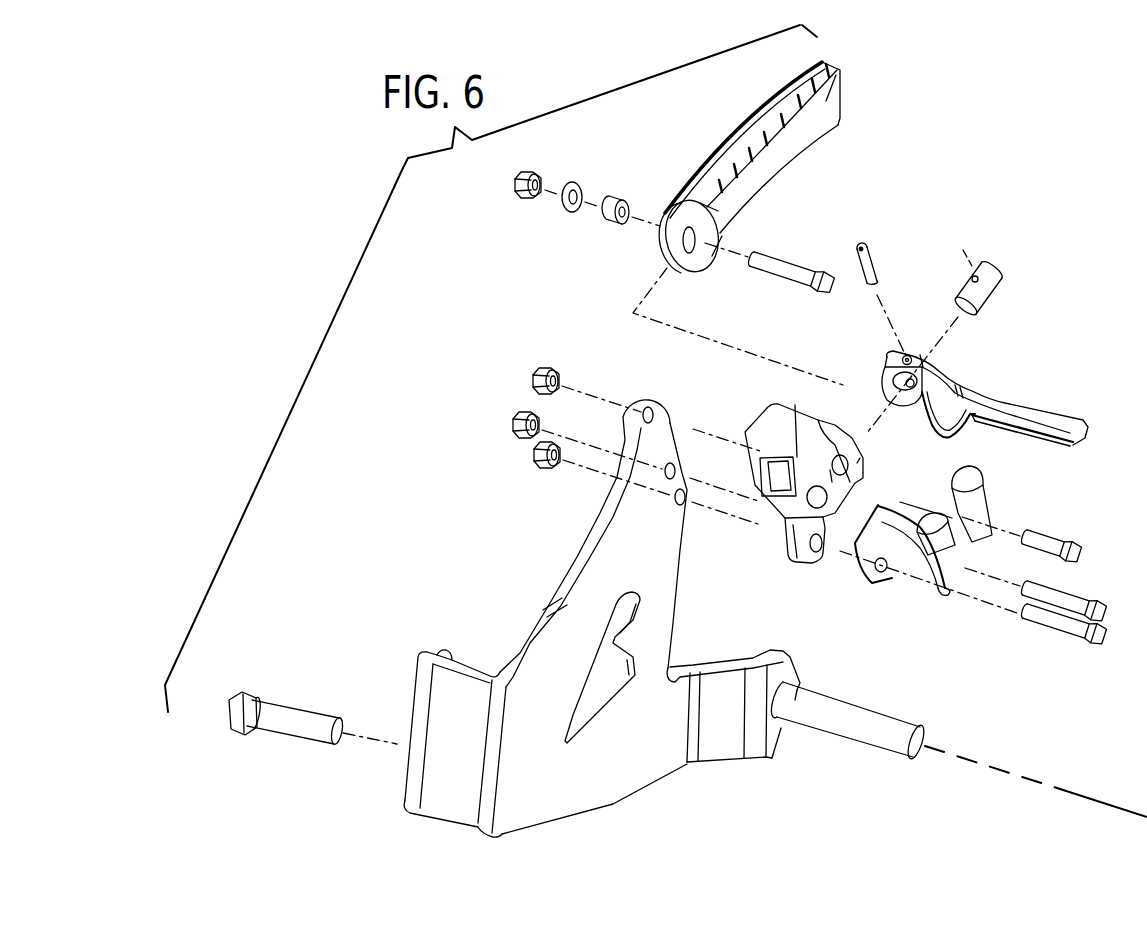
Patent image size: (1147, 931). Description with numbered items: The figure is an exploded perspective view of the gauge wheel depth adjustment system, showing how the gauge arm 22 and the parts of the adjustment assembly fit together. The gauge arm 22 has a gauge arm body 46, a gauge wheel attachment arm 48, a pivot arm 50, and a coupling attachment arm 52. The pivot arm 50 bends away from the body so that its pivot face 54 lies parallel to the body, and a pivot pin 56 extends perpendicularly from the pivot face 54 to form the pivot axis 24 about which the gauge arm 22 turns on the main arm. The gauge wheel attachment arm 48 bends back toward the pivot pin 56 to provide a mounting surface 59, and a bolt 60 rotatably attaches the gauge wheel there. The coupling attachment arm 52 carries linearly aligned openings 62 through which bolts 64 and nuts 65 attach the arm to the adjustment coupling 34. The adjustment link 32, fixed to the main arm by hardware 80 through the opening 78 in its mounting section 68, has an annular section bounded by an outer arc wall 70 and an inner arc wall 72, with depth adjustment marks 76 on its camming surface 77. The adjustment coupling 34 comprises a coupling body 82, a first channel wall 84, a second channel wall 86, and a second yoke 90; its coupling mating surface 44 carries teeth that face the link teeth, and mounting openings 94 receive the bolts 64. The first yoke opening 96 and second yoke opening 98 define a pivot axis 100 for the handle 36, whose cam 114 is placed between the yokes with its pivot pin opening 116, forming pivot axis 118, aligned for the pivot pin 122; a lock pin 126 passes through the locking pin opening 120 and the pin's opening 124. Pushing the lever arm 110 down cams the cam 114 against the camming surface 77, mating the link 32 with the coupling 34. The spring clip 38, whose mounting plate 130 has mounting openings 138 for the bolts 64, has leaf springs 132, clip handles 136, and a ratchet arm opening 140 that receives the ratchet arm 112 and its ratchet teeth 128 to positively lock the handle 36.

The gauge arm 22 is at (646, 614).
The pivot axis 24 is at (1088, 798).
The adjustment link 32 is at (753, 167).
The adjustment coupling 34 is at (808, 471).
The handle 36 is at (973, 385).
The spring clip 38 is at (946, 563).
The coupling mating surface 44 is at (745, 452).
The gauge arm body 46 is at (610, 805).
The gauge wheel attachment arm 48 is at (403, 805).
The pivot arm 50 is at (737, 732).
The coupling attachment arm 52 is at (675, 442).
The pivot face 54 is at (783, 737).
The pivot pin 56 is at (857, 748).
The mounting surface 59 is at (425, 650).
The bolt 60 is at (275, 703).
The openings 62 is at (657, 398).
The bolts 64 is at (1057, 541).
The nuts 65 is at (532, 382).
The mounting section 68 is at (667, 253).
The outer arc wall 70 is at (736, 138).
The inner arc wall 72 is at (838, 123).
The depth adjustment marks 76 is at (746, 148).
The camming surface 77 is at (827, 97).
The opening 78 is at (688, 253).
The hardware 80 is at (508, 183).
The coupling body 82 is at (762, 427).
The first channel wall 84 is at (778, 460).
The second channel wall 86 is at (811, 566).
The second yoke 90 is at (844, 417).
The mounting openings 94 is at (825, 563).
The first yoke opening 96 is at (794, 405).
The second yoke opening 98 is at (855, 468).
The pivot axis 100 is at (857, 463).
The lever arm 110 is at (1047, 413).
The ratchet arm 112 is at (963, 433).
The cam 114 is at (880, 378).
The pivot pin opening 116 is at (907, 391).
The pivot axis 118 is at (930, 354).
The locking pin opening 120 is at (909, 355).
The pivot pin 122 is at (959, 332).
The opening 124 is at (988, 268).
The lock pin 126 is at (877, 255).
The ratchet teeth 128 is at (982, 422).
The mounting plate 130 is at (900, 575).
The leaf springs 132 is at (905, 515).
The clip handles 136 is at (985, 518).
The mounting openings 138 is at (894, 582).
The ratchet arm opening 140 is at (972, 478).